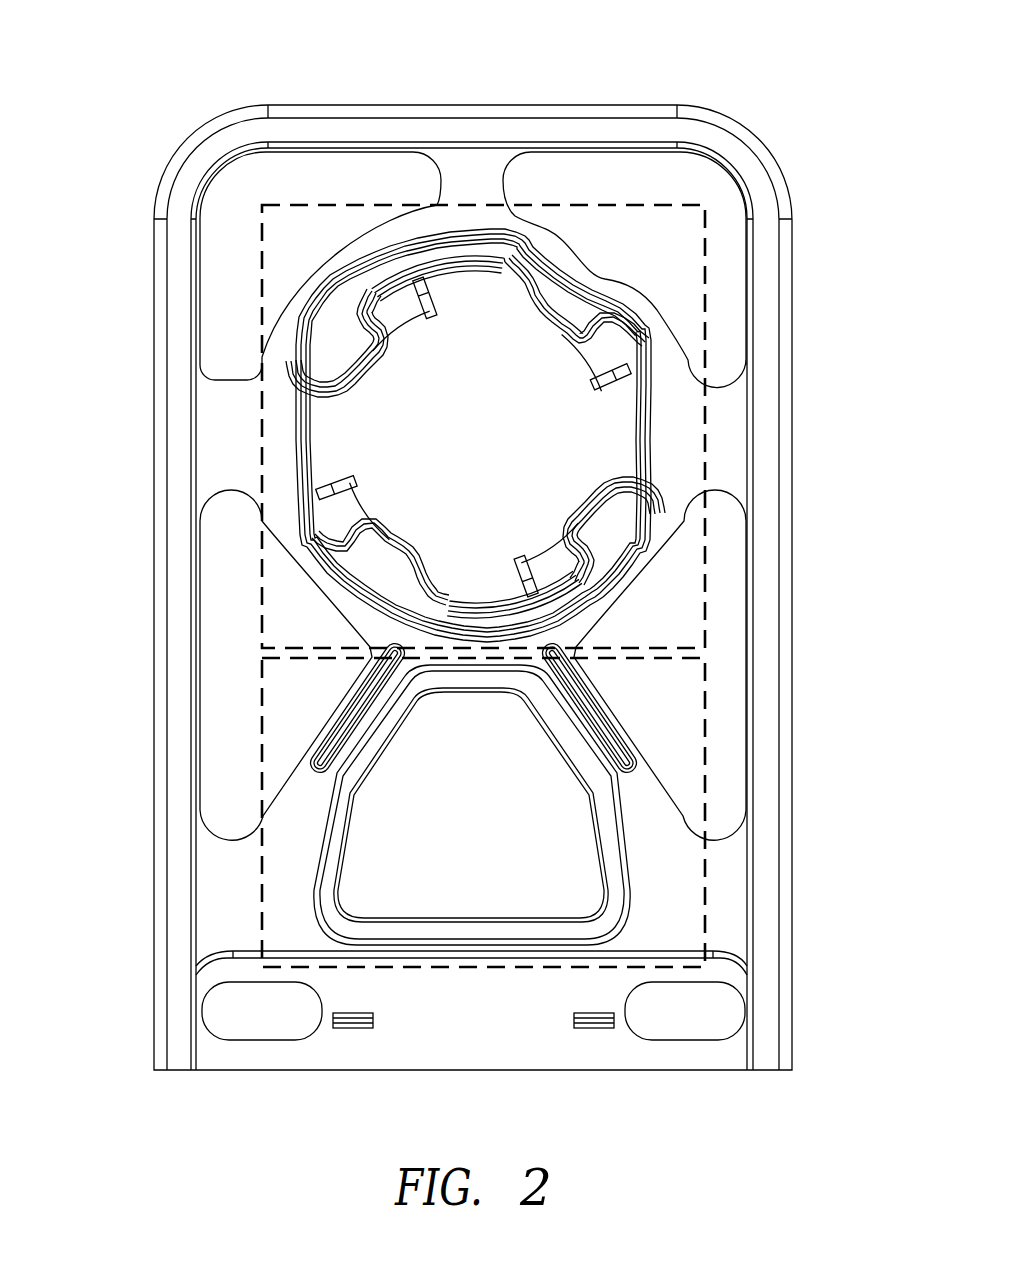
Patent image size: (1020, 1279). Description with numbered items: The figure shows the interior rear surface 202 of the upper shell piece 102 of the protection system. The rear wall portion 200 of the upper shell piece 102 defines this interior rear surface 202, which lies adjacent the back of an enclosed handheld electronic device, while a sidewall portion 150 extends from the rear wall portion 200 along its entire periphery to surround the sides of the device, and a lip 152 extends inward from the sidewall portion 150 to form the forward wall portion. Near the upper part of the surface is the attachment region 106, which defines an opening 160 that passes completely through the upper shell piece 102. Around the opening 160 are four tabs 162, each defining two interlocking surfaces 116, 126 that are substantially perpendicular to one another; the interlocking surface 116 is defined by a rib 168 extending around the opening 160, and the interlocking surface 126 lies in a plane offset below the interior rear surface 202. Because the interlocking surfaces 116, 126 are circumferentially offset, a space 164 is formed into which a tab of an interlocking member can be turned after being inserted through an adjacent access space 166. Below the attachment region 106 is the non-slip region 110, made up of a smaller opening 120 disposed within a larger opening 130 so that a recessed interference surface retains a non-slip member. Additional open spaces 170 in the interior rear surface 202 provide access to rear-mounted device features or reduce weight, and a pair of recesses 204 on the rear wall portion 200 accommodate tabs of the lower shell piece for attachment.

The upper shell piece 102 is at (186, 52).
The rear wall portion 200 is at (467, 186).
The access space 166 is at (483, 290).
The open spaces 170 is at (352, 248).
The interlocking surface 116 is at (655, 335).
The interlocking surface 126 is at (607, 367).
The attachment region 106 is at (710, 441).
The space 164 is at (396, 308).
The opening 160 is at (517, 316).
The tab 162 is at (376, 360).
The rib 168 is at (412, 545).
The sidewall portion 150 is at (784, 619).
The lip 152 is at (748, 669).
The non-slip region 110 is at (710, 736).
The larger opening 130 is at (624, 793).
The smaller opening 120 is at (610, 868).
The interior rear surface 202 is at (243, 886).
The recesses 204 is at (357, 1028).